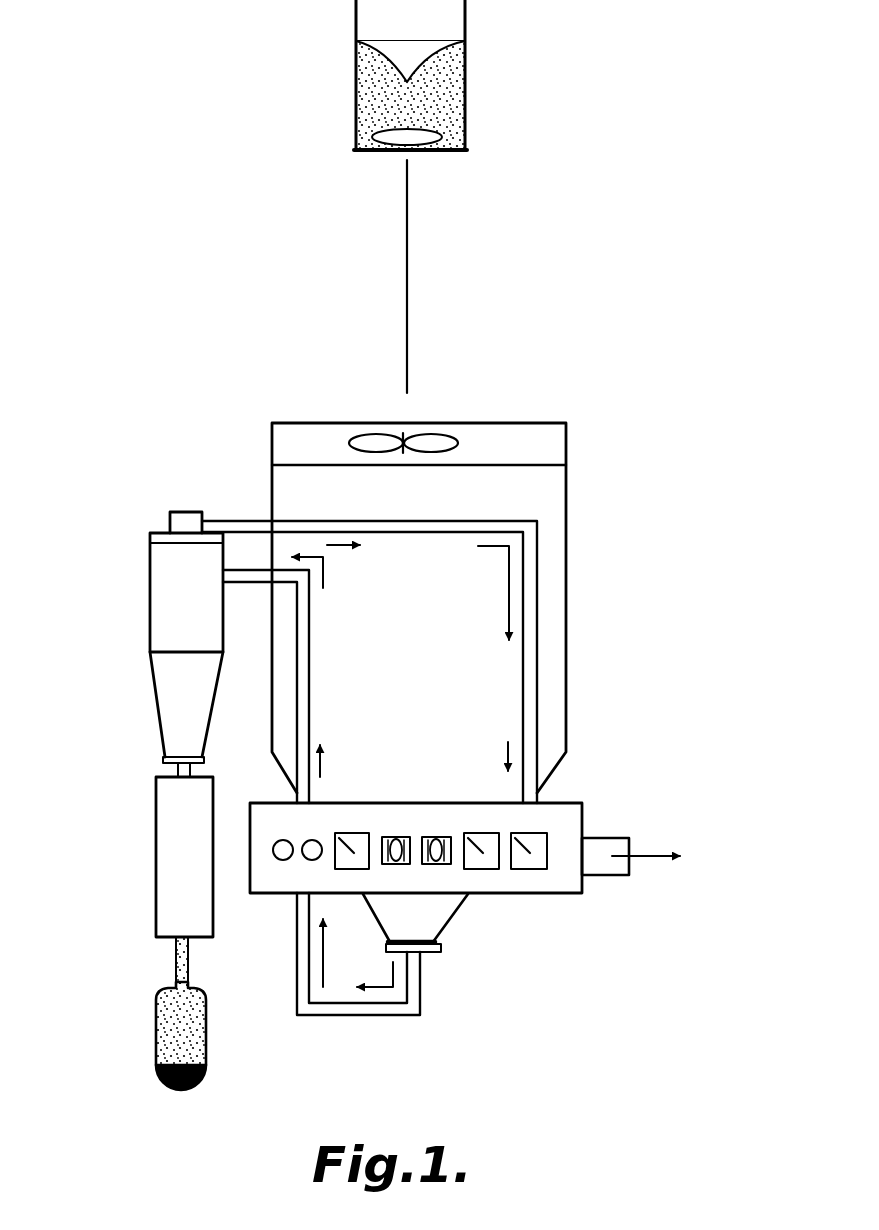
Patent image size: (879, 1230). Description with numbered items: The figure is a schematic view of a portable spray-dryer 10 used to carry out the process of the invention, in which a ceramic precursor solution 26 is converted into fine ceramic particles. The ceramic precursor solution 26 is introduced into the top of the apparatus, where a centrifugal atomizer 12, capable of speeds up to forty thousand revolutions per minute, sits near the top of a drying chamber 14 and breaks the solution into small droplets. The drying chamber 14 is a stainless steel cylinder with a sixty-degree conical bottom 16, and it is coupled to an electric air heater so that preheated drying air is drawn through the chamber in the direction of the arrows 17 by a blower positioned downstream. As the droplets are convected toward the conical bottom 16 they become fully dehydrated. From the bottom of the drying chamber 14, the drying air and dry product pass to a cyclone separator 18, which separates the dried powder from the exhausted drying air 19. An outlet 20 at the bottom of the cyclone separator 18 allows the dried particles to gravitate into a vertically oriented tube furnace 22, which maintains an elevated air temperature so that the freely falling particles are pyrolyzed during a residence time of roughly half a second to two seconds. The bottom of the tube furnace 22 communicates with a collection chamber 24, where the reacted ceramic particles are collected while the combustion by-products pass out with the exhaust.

The spray-dryer 10 is at (624, 514).
The centrifugal atomizer 12 is at (458, 445).
The drying chamber 14 is at (566, 632).
The conical bottom 16 is at (455, 918).
The arrows 17 is at (323, 773).
The cyclone separator 18 is at (150, 621).
The exhausted drying air 19 is at (652, 856).
The outlet 20 is at (178, 770).
The tube furnace 22 is at (156, 884).
The collection chamber 24 is at (156, 1048).
The ceramic precursor solution 26 is at (467, 90).